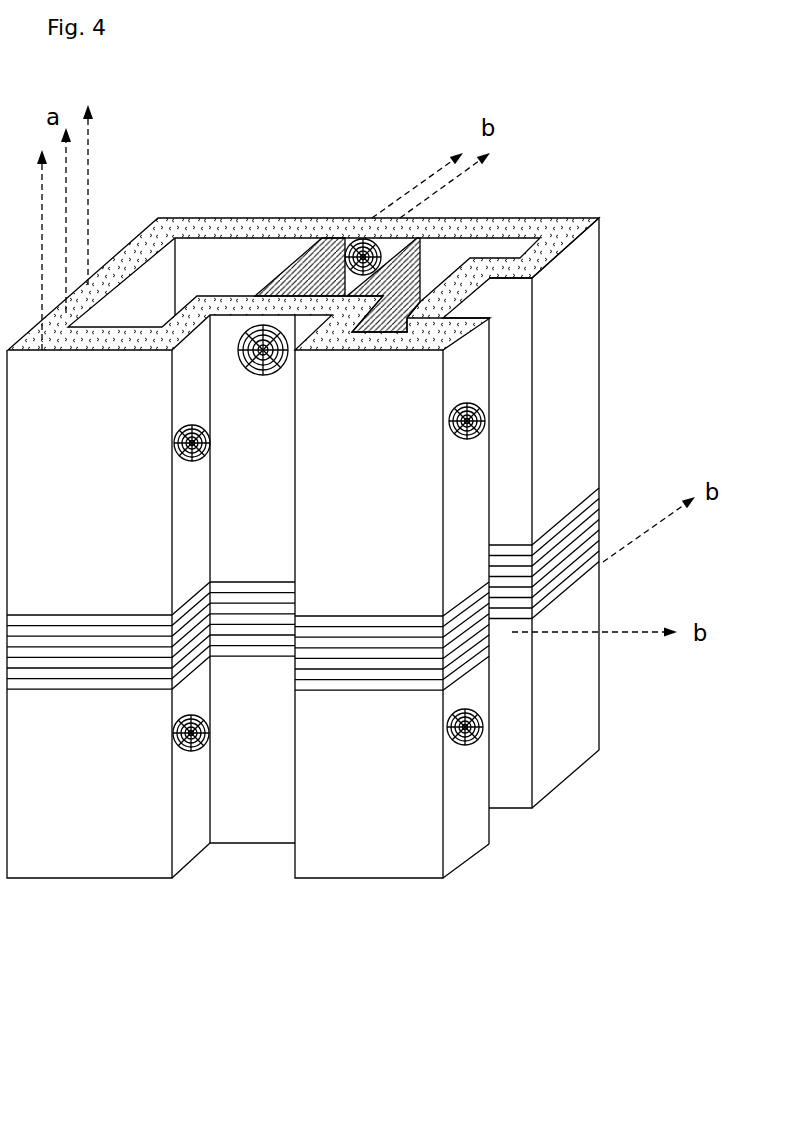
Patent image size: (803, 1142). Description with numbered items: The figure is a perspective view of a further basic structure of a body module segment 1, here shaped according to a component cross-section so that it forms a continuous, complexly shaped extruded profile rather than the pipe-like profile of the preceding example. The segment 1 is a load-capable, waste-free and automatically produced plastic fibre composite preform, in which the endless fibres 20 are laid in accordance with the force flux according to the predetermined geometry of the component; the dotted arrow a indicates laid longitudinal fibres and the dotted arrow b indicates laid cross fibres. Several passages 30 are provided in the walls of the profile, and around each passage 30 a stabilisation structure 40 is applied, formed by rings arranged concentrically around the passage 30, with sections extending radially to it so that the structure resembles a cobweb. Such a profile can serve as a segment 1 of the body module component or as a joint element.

The body module segment 1 is at (316, 579).
The endless fibres 20 is at (50, 637).
The passage 30 is at (257, 376).
The stabilisation structure 40 is at (446, 445).